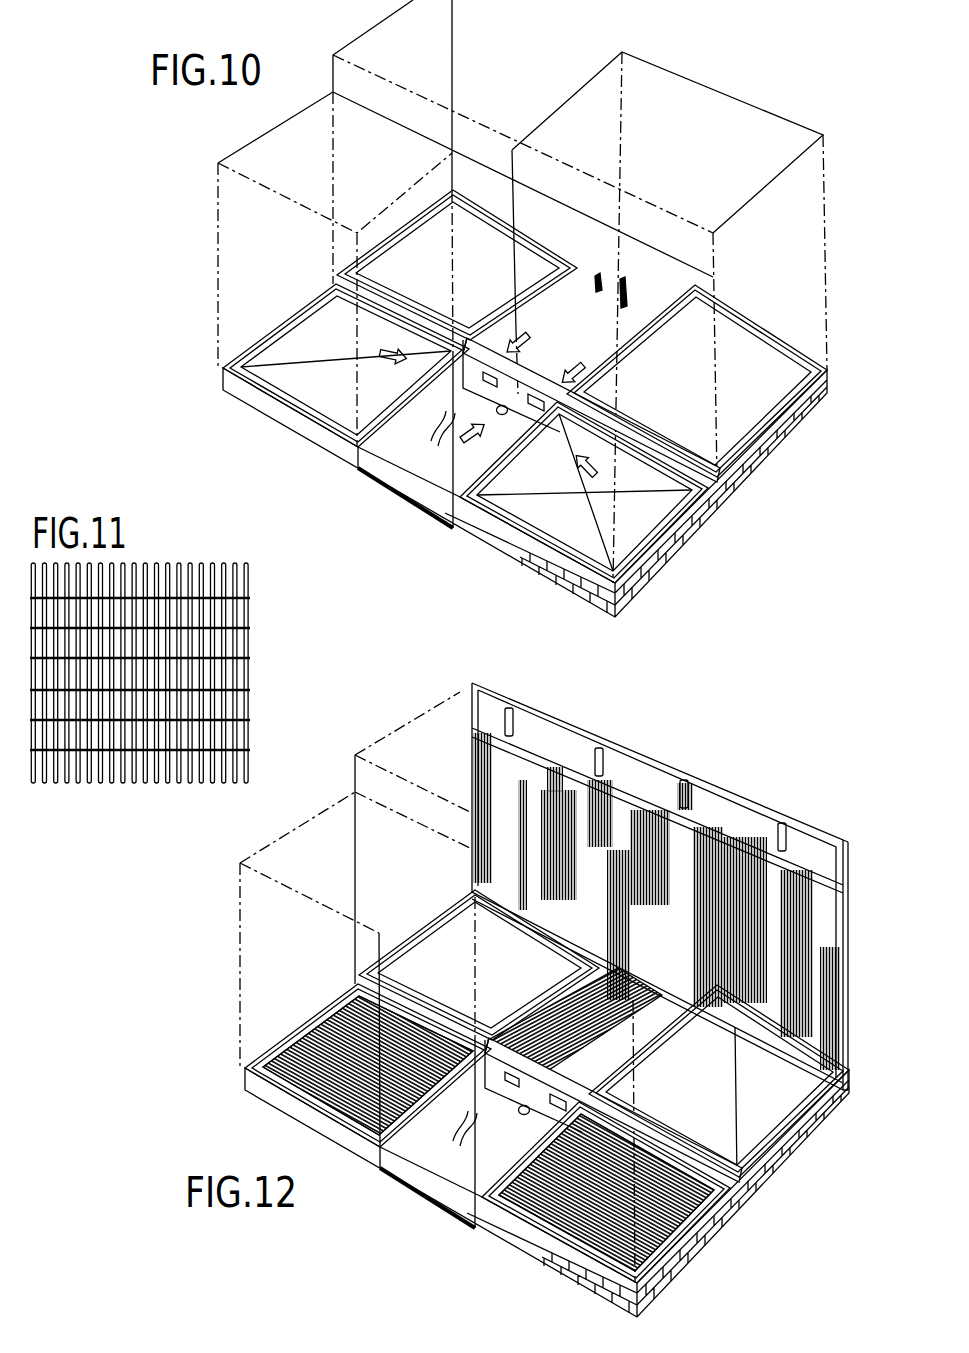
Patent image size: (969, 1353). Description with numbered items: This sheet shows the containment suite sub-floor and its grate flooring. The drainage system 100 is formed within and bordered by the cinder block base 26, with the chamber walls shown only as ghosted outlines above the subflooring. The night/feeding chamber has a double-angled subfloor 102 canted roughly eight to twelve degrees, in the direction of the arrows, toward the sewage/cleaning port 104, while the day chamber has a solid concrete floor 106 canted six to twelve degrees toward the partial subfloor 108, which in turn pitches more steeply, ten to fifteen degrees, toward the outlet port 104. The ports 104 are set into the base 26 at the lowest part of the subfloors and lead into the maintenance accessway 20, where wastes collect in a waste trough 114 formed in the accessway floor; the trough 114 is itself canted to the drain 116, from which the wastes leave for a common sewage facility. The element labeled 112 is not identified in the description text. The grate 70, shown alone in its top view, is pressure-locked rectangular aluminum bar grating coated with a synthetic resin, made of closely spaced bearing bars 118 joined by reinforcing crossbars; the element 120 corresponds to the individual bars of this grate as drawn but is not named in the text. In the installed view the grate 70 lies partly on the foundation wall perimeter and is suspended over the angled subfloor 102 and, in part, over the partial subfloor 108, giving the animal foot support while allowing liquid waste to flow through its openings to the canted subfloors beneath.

In FIG. 10, the drainage system 100 is at (275, 397).
In FIG. 10, the night/feeding chamber angled subfloor 102 is at (340, 413).
In FIG. 10, the sewage/cleaning port 104 is at (455, 402).
In FIG. 10, the solid concrete floor 106 is at (748, 412).
In FIG. 12, the solid concrete floor 106 is at (793, 1092).
In FIG. 10, the partial subfloor 108 is at (633, 320).
In FIG. 10, the front wall of tray 112 is at (390, 462).
In FIG. 10, the waste trough 114 is at (447, 418).
In FIG. 10, the drain 116 is at (505, 415).
In FIG. 10, the maintenance accessway 20 is at (447, 503).
In FIG. 10, the cinder block base 26 is at (718, 510).
In FIG. 11, the grate 70 is at (250, 680).
In FIG. 12, the grate 70 is at (267, 1080).
In FIG. 11, the bearing bars 118 is at (213, 638).
In FIG. 11, the slat 120 is at (227, 602).